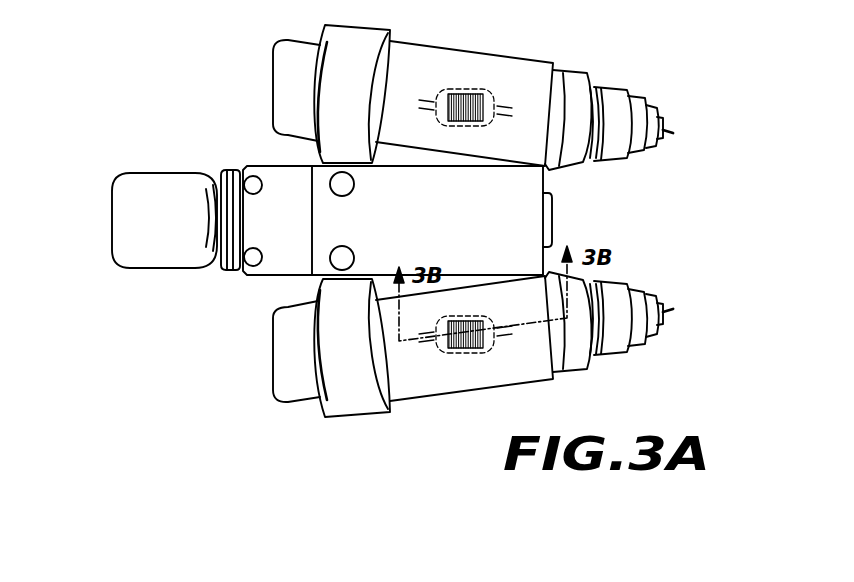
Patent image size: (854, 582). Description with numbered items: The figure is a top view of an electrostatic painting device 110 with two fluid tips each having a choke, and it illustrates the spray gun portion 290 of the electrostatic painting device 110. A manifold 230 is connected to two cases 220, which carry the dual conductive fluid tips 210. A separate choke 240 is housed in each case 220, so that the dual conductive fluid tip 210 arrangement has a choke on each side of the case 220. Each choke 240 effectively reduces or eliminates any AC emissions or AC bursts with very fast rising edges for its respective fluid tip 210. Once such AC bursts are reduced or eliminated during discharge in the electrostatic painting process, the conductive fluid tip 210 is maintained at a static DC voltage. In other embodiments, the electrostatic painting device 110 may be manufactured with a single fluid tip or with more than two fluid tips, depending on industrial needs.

The electrostatic painting device 110 is at (118, 53).
The conductive fluid tip 210 is at (676, 118).
The case 220 is at (417, 47).
The manifold 230 is at (263, 166).
The choke 240 is at (480, 92).
The spray gun portion 290 is at (714, 210).